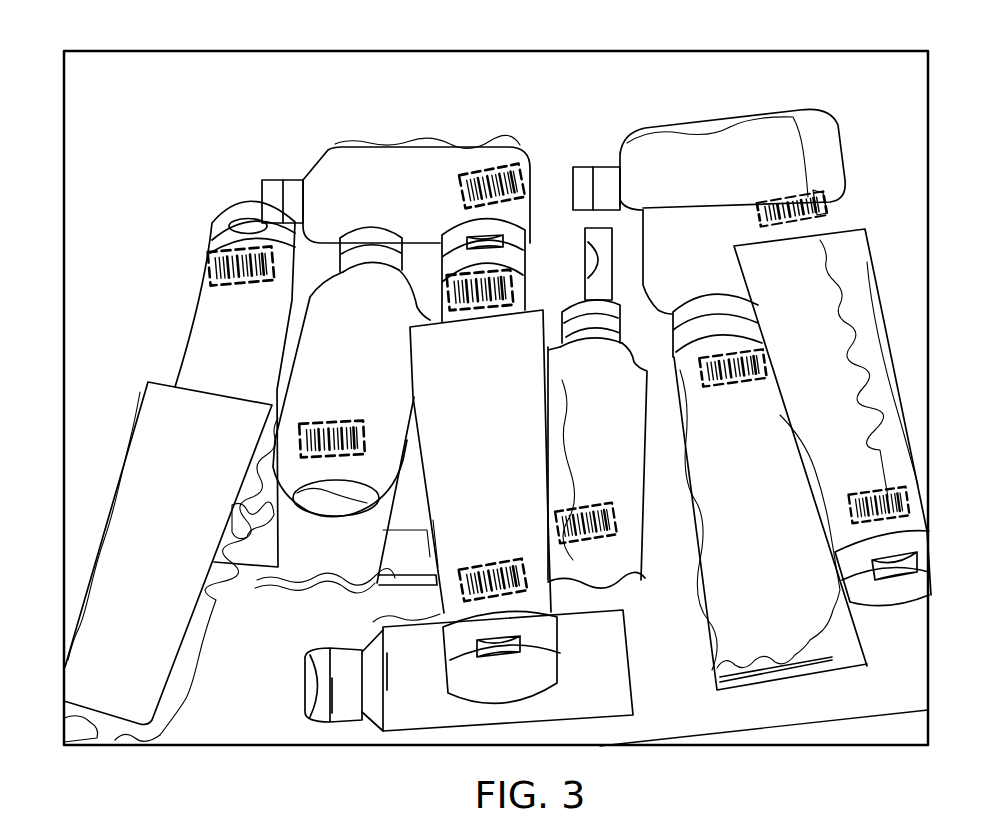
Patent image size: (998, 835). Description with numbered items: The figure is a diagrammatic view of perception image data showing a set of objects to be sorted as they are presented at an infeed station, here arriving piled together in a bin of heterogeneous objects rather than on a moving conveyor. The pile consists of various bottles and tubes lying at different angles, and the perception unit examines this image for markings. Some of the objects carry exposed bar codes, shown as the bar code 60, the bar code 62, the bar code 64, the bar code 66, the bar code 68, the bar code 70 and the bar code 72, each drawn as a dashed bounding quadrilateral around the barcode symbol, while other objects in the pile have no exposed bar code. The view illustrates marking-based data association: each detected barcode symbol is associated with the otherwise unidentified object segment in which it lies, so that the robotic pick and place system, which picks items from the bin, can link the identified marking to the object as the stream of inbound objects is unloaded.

The exposed bar code 60 is at (491, 268).
The exposed bar code 62 is at (815, 210).
The exposed bar code 64 is at (908, 496).
The exposed bar code 66 is at (604, 537).
The exposed bar code 68 is at (462, 588).
The exposed bar code 70 is at (303, 449).
The exposed bar code 72 is at (212, 265).